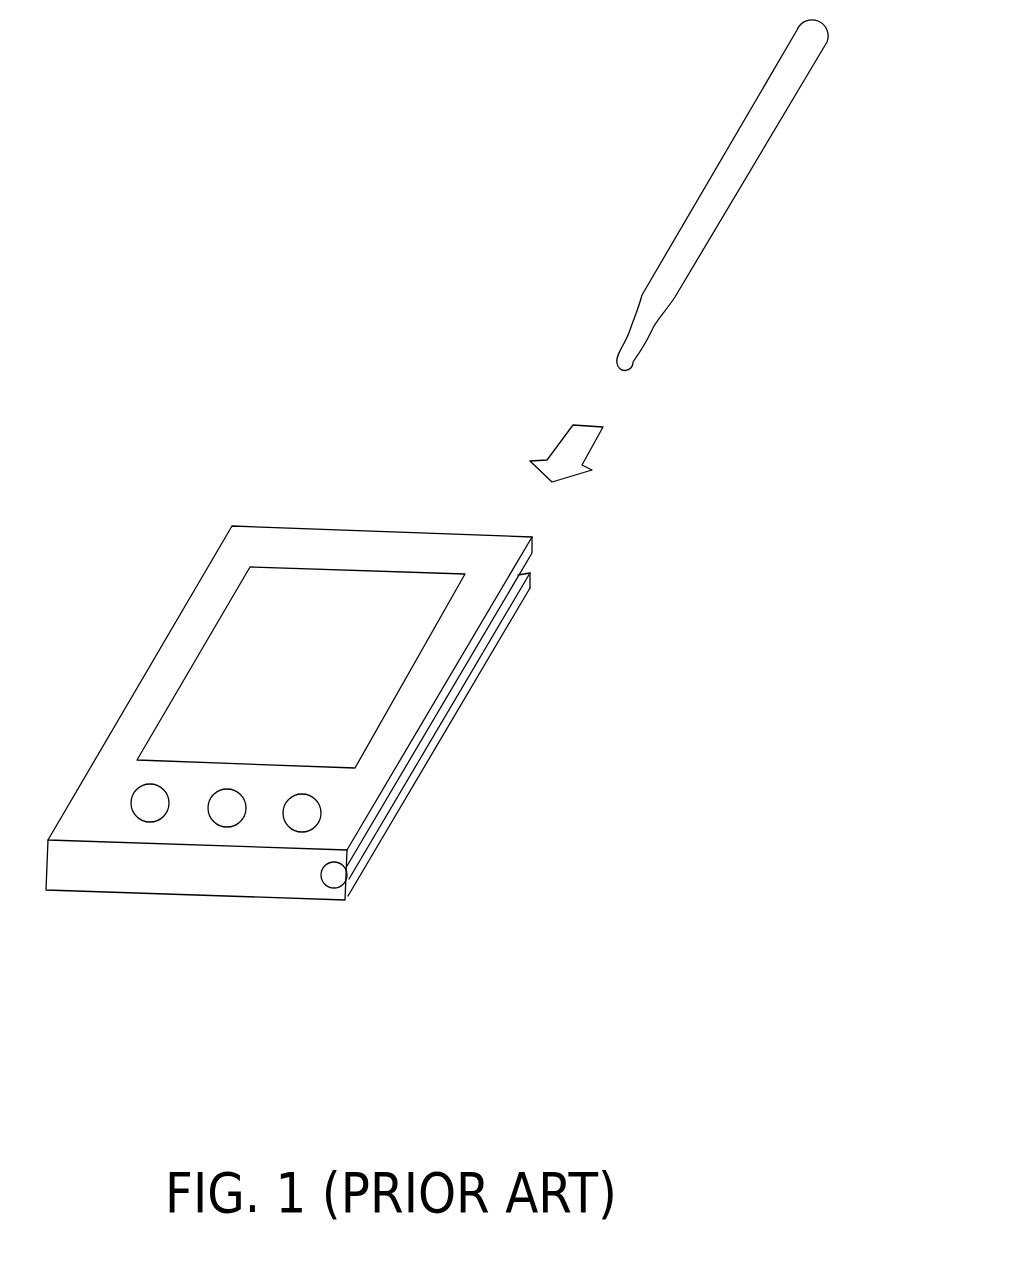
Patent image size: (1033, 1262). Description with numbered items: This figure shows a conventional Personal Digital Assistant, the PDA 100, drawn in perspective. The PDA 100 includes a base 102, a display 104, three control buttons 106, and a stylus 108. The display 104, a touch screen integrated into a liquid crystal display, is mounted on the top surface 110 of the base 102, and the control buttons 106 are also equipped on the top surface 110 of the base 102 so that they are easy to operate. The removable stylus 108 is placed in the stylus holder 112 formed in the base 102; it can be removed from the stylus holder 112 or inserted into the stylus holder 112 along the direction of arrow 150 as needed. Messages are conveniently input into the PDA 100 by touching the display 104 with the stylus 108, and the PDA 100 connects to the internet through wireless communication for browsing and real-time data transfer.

The PDA 100 is at (270, 213).
The base 102 is at (325, 526).
The display 104 is at (225, 665).
The control buttons 106 is at (143, 800).
The stylus 108 is at (723, 180).
The top surface 110 is at (423, 557).
The stylus holder 112 is at (333, 876).
The arrow 150 is at (572, 445).